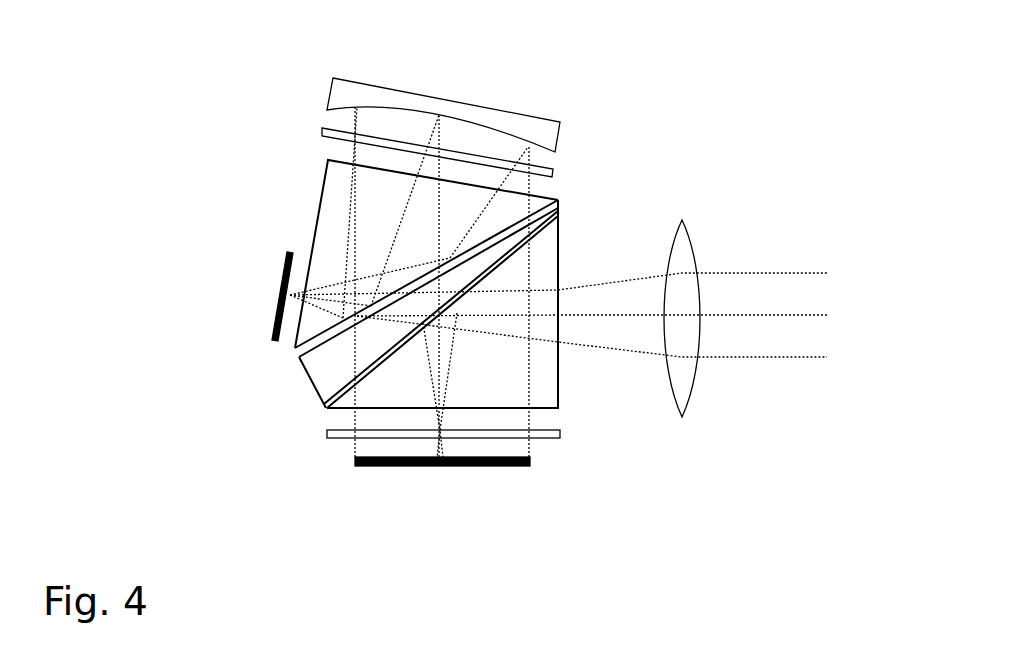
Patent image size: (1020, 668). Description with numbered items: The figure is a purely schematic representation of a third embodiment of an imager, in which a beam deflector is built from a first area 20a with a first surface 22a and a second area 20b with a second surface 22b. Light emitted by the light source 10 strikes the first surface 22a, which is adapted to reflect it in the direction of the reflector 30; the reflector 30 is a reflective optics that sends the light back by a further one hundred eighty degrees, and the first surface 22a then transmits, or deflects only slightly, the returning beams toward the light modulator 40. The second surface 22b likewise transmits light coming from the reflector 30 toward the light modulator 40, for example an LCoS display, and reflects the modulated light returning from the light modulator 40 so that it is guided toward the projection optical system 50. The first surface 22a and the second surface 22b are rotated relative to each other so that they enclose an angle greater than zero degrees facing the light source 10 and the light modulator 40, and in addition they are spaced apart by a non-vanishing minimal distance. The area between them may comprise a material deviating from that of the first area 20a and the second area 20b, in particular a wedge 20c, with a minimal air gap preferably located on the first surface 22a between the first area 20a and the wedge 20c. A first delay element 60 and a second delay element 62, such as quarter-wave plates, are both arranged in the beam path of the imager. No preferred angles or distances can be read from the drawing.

The light source 10 is at (287, 262).
The first area 20a is at (318, 220).
The second area 20b is at (540, 252).
The wedge 20c is at (333, 370).
The first surface 22a is at (297, 357).
The second surface 22b is at (327, 391).
The reflector 30 is at (335, 102).
The light modulator 40 is at (503, 465).
The projection optical system 50 is at (682, 228).
The first delay element 60 is at (553, 173).
The second delay element 62 is at (558, 433).